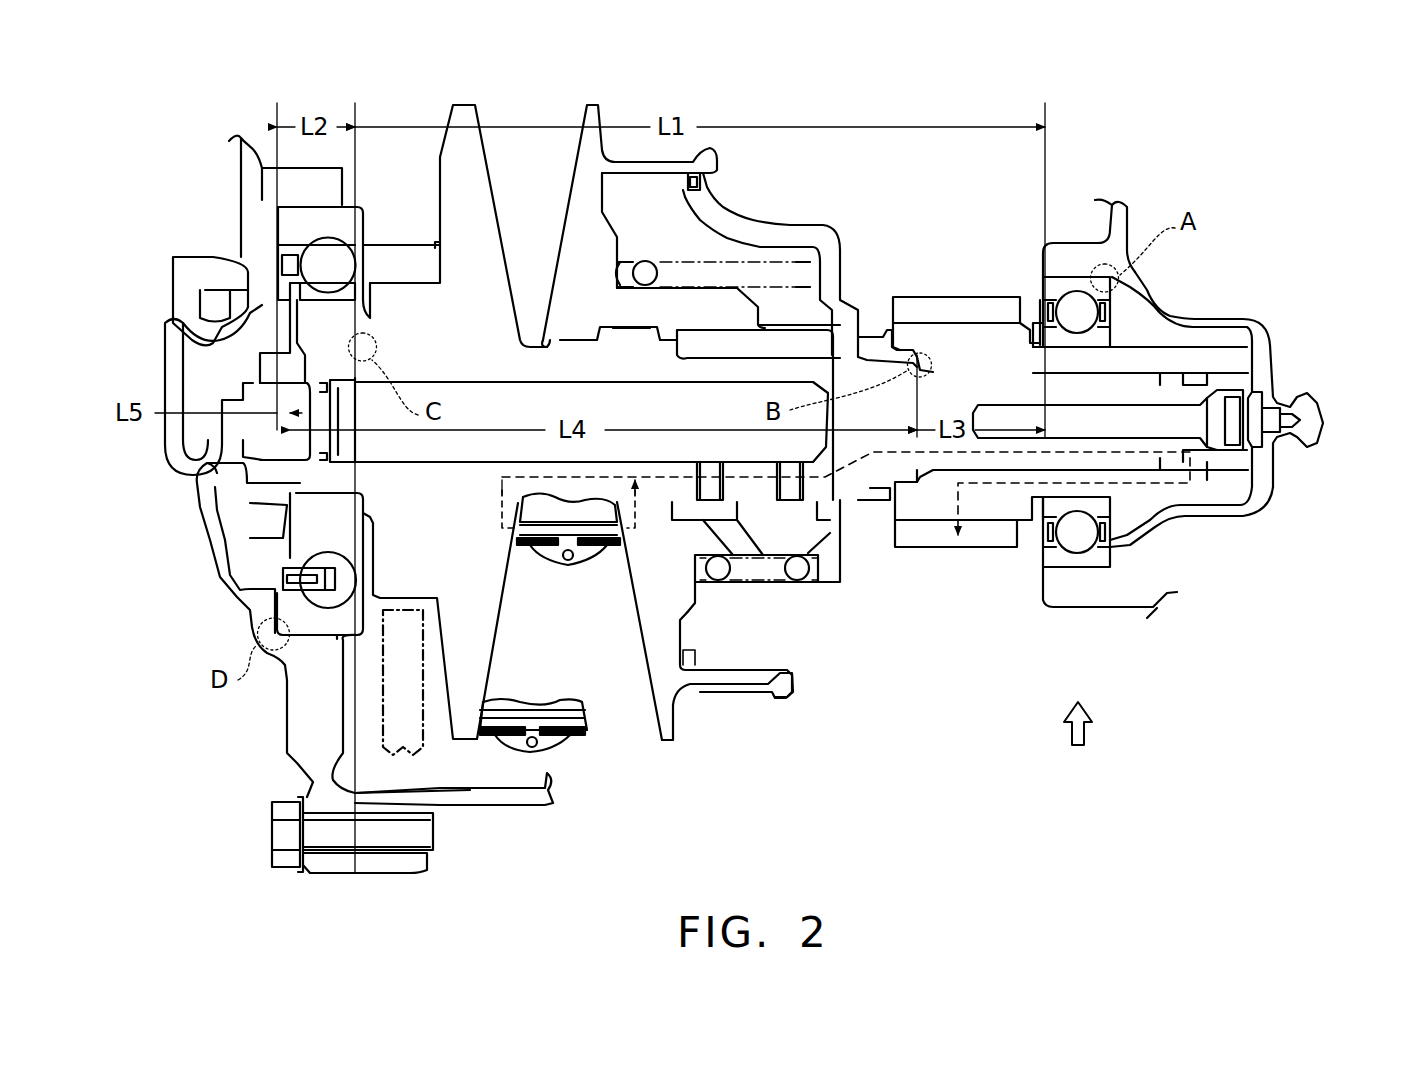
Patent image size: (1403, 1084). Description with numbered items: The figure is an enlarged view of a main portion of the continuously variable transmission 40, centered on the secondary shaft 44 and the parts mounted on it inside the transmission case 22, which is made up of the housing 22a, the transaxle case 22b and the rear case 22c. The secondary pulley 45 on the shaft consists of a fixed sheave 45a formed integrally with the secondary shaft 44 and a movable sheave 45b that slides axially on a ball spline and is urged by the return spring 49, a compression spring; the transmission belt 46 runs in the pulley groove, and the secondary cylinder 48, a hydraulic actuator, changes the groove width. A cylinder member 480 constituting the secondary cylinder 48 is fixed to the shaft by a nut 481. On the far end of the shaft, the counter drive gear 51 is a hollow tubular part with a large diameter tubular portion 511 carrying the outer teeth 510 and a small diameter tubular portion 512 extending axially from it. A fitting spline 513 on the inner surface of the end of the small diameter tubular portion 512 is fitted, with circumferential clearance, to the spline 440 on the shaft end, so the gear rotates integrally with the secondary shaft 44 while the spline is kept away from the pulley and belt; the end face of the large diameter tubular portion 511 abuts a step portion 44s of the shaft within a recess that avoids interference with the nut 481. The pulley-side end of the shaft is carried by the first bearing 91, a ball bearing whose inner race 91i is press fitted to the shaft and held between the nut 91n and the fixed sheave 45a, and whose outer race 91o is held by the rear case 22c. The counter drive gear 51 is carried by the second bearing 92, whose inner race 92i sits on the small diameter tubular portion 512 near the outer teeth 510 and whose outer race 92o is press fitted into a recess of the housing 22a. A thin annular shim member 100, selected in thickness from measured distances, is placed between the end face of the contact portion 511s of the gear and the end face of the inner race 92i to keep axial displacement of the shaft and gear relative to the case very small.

The continuously variable transmission 40 is at (1167, 148).
The transmission case 22 is at (238, 167).
The housing 22a is at (1270, 348).
The transaxle case 22b is at (473, 797).
The rear case 22c is at (298, 740).
The secondary shaft 44 is at (297, 475).
The step portion 44s is at (922, 497).
The secondary pulley 45 is at (684, 725).
The fixed sheave 45a is at (465, 102).
The movable sheave 45b is at (592, 102).
The transmission belt 46 is at (550, 567).
The secondary cylinder 48 is at (758, 220).
The return spring 49 is at (688, 270).
The counter drive gear 51 is at (917, 552).
The first bearing 91 is at (282, 557).
The outer race 91o is at (303, 218).
The inner race 91i is at (305, 290).
The nut 91n is at (277, 513).
The second bearing 92 is at (1113, 528).
The inner race 92i is at (1098, 337).
The outer race 92o is at (1077, 562).
The shim member 100 is at (1033, 523).
The spline 440 is at (1207, 482).
The cylinder member 480 is at (817, 605).
The nut 481 is at (870, 497).
The outer teeth 510 is at (957, 300).
The large diameter tubular portion 511 is at (940, 345).
The contact portion 511s is at (1032, 330).
The small diameter tubular portion 512 is at (1240, 492).
The fitting spline 513 is at (1245, 350).